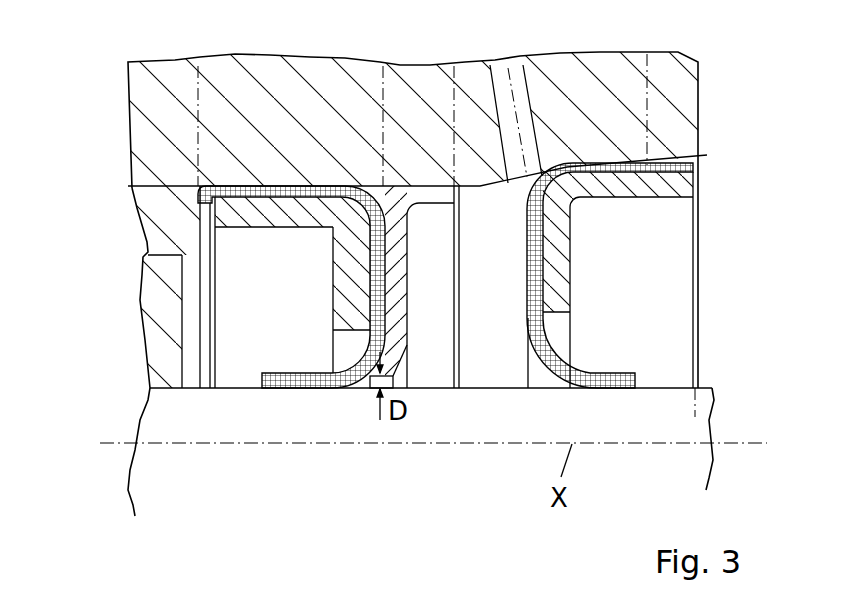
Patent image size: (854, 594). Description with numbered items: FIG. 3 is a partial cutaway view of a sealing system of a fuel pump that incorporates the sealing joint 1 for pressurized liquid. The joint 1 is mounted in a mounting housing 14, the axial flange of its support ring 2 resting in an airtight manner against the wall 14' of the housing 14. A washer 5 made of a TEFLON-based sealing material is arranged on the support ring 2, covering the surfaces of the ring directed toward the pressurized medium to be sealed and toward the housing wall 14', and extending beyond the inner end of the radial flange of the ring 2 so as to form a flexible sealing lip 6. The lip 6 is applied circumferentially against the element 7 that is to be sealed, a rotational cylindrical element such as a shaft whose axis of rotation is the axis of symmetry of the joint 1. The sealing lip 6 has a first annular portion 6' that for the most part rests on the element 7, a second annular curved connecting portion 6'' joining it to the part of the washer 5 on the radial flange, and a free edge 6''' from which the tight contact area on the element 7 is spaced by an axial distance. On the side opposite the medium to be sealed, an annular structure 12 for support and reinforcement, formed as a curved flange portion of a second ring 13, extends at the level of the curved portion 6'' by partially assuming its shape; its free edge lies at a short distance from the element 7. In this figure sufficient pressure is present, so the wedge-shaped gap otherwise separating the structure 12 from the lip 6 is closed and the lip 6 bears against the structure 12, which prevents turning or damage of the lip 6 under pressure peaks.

The sealing joint 1 is at (238, 348).
The support ring 2 is at (338, 228).
The washer 5 is at (372, 203).
The sealing lip 6 is at (304, 482).
The first annular portion 6' is at (300, 459).
The second annular curved connecting portion 6'' is at (362, 459).
The free edge 6''' is at (252, 459).
The element to be sealed 7 is at (652, 385).
The annular structure for support and reinforcement 12 is at (392, 350).
The second ring 13 is at (393, 268).
The mounting housing 14 is at (408, 284).
The wall of the mounting housing 14' is at (417, 97).